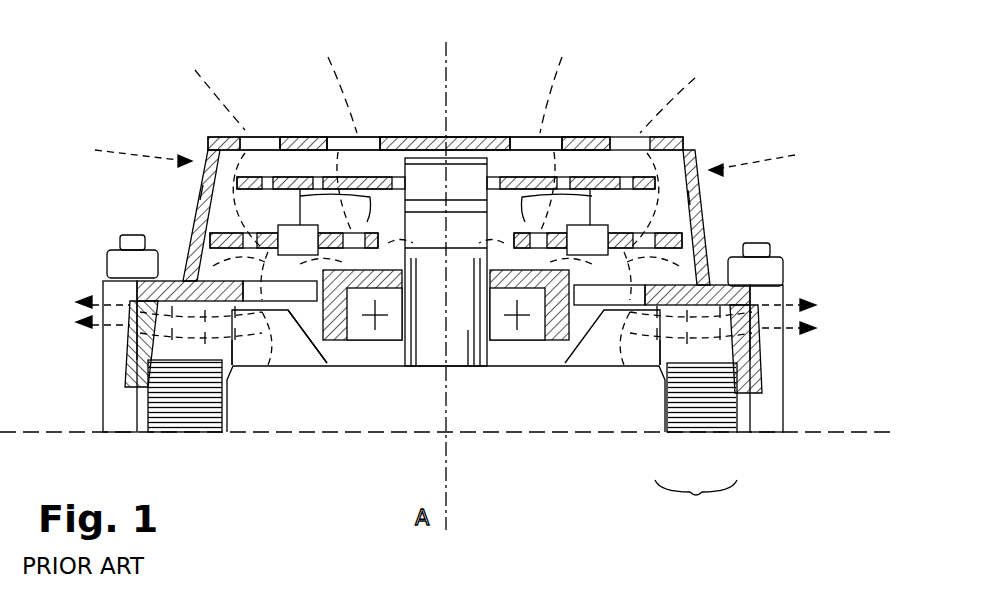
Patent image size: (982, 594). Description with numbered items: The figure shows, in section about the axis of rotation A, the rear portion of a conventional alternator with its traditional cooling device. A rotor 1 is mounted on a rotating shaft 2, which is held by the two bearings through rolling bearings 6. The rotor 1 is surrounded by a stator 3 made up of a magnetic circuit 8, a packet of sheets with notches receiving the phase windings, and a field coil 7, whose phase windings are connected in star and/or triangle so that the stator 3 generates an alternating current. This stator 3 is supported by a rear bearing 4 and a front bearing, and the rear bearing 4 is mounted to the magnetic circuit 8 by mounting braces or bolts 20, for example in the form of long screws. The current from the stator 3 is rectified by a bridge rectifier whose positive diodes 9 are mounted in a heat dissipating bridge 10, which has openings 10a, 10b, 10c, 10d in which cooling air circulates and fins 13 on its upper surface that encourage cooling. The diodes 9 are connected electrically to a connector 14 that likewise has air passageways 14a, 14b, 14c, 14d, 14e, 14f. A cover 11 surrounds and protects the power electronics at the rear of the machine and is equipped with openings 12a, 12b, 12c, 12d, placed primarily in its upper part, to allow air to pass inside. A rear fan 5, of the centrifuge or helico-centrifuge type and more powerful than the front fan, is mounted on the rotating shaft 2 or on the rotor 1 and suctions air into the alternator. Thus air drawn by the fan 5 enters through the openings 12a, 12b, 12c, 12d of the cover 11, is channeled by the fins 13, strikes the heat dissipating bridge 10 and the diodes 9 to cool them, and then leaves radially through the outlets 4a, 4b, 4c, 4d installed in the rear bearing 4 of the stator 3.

The rotor 1 is at (385, 400).
The rotating shaft 2 is at (463, 367).
The stator 3 is at (696, 502).
The rear bearing 4 is at (127, 372).
The outlet 4a is at (130, 340).
The outlet 4b is at (260, 347).
The outlet 4c is at (607, 335).
The outlet 4d is at (757, 345).
The rear fan 5 is at (287, 340).
The rolling bearings 6 is at (525, 340).
The field coil 7 is at (705, 357).
The magnetic circuit 8 is at (687, 408).
The diodes 9 is at (592, 165).
The heat dissipating bridge 10 is at (210, 237).
The opening 10a is at (688, 177).
The opening 10b is at (528, 233).
The opening 10c is at (365, 233).
The opening 10d is at (215, 198).
The cover 11 is at (430, 137).
The opening 12a is at (632, 137).
The opening 12b is at (537, 137).
The opening 12c is at (338, 135).
The opening 12d is at (247, 135).
The fins 13 is at (197, 190).
The connector 14 is at (257, 165).
The air passageway 14a is at (600, 225).
The air passageway 14b is at (580, 195).
The air passageway 14c is at (452, 135).
The air passageway 14d is at (373, 198).
The air passageway 14e is at (298, 137).
The air passageway 14f is at (253, 168).
The mounting braces or bolts 20 is at (108, 260).